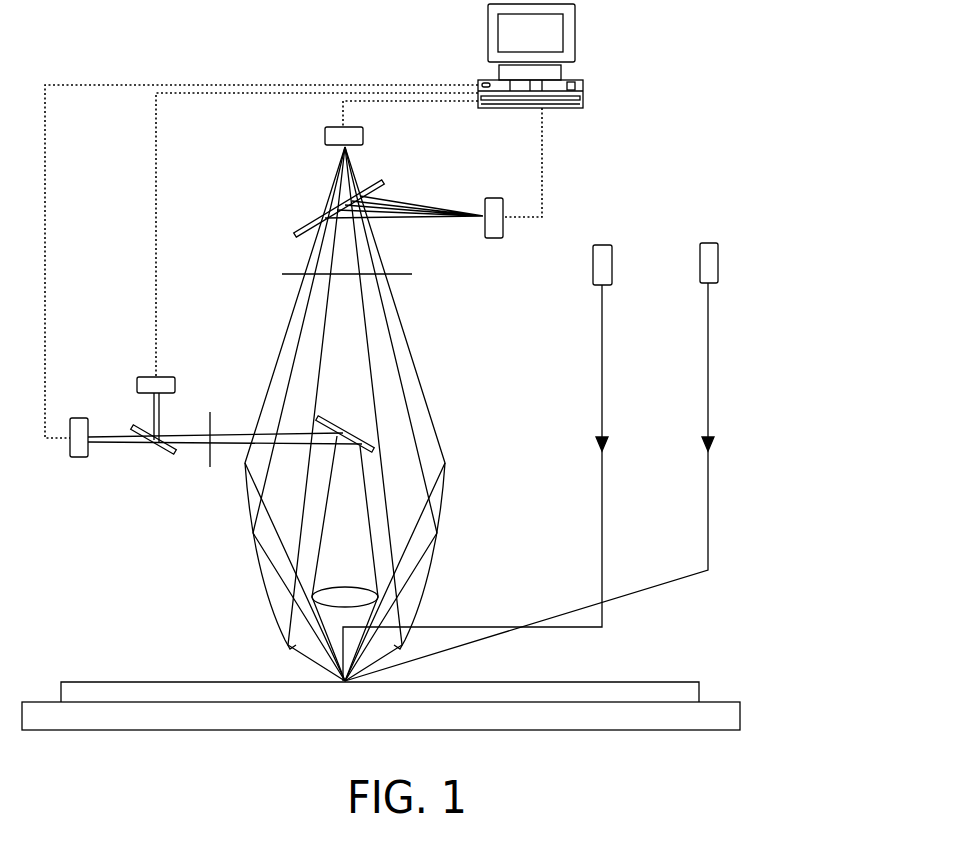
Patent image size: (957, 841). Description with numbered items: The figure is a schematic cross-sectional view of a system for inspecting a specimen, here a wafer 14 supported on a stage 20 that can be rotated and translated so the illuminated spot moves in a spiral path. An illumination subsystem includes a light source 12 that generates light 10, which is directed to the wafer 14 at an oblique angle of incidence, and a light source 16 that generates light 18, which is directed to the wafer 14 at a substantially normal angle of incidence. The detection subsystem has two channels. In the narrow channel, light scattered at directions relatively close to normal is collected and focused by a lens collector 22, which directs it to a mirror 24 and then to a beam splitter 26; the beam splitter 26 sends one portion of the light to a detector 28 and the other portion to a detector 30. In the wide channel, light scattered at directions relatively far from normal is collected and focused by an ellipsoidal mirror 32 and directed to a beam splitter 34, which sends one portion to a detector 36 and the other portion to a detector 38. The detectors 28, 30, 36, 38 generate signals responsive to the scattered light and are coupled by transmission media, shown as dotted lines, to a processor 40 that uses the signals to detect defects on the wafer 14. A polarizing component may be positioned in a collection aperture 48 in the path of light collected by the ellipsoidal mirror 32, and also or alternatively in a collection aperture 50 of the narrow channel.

The light 10 is at (709, 397).
The light source 12 is at (718, 255).
The wafer 14 is at (688, 680).
The light source 16 is at (612, 257).
The light 18 is at (603, 397).
The stage 20 is at (740, 715).
The lens collector 22 is at (343, 585).
The mirror 24 is at (350, 432).
The beam splitter 26 is at (158, 449).
The detector 28 is at (82, 460).
The detector 30 is at (175, 385).
The ellipsoidal mirror 32 is at (432, 562).
The beam splitter 34 is at (300, 223).
The detector 36 is at (363, 135).
The detector 38 is at (493, 198).
The processor 40 is at (583, 96).
The collection aperture 48 is at (405, 273).
The collection aperture 50 is at (208, 453).